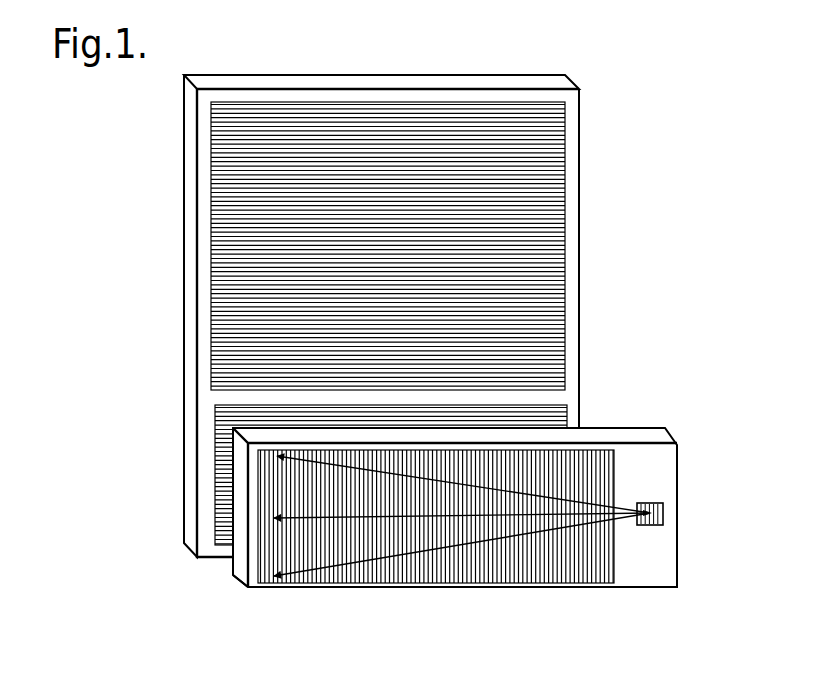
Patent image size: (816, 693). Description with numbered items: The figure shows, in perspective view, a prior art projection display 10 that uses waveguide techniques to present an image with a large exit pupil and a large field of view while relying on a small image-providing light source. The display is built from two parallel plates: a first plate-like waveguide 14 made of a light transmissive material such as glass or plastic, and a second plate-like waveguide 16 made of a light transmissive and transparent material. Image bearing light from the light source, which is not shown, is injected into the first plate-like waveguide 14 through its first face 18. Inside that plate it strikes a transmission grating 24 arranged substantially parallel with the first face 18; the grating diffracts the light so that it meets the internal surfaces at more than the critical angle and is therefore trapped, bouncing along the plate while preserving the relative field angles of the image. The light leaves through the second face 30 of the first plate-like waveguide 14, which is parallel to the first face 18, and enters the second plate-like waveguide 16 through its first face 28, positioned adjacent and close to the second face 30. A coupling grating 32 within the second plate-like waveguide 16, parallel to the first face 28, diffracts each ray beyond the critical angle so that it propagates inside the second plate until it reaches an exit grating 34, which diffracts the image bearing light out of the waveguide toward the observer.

The projection display 10 is at (634, 157).
The first plate-like waveguide 14 is at (652, 438).
The second plate-like waveguide 16 is at (572, 103).
The first face 18 is at (648, 573).
The transmission grating 24 is at (573, 568).
The first face 28 is at (576, 270).
The second face 30 is at (616, 419).
The coupling grating 32 is at (223, 465).
The exit grating 34 is at (228, 293).